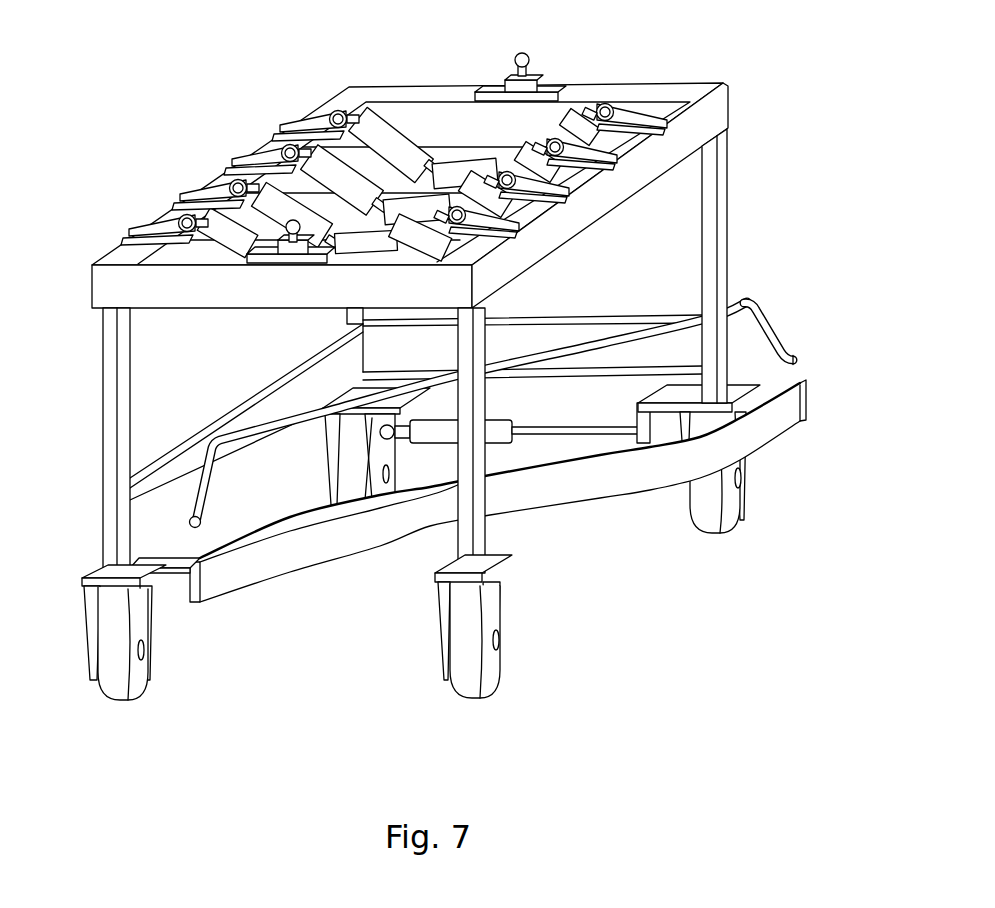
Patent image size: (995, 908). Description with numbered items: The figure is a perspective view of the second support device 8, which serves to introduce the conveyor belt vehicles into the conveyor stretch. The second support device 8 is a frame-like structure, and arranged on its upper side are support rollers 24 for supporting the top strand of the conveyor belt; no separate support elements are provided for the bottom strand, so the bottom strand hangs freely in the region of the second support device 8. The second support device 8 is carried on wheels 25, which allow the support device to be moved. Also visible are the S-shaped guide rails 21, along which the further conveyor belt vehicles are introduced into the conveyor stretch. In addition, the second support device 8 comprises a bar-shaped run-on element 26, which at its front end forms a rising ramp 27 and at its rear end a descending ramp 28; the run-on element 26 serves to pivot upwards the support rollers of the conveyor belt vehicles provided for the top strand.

The second support device 8 is at (350, 100).
The S-shaped guide rails 21 is at (570, 483).
The support rollers 24 is at (387, 142).
The wheels 25 is at (468, 662).
The bar-shaped run-on element 26 is at (438, 370).
The rising ramp 27 is at (770, 345).
The descending ramp 28 is at (203, 468).